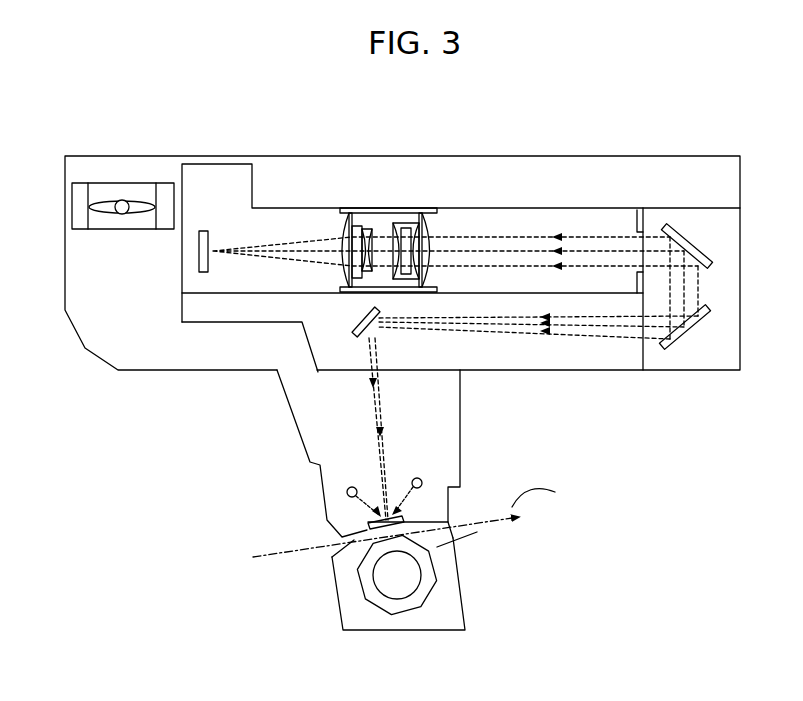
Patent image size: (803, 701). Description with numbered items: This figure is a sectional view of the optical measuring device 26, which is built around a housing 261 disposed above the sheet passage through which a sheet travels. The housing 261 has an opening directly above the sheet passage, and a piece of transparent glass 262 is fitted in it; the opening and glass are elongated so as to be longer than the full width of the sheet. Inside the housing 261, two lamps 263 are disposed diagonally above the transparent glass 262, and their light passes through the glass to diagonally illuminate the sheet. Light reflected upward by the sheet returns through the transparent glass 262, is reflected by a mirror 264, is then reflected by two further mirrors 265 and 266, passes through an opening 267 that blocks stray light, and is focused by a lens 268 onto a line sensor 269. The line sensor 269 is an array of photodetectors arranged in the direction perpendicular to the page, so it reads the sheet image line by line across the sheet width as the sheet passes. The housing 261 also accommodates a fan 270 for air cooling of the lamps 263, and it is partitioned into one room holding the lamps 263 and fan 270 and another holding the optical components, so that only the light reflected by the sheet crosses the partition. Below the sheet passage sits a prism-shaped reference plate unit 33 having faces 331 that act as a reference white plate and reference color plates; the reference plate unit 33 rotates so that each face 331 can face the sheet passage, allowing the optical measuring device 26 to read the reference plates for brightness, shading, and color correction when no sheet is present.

The optical measuring device 26 is at (572, 115).
The housing 261 is at (741, 287).
The transparent glass 262 is at (368, 525).
The lamps 263 is at (417, 480).
The mirror 264 is at (352, 327).
The mirror 265 is at (672, 348).
The mirror 266 is at (680, 240).
The opening 267 is at (640, 238).
The lens 268 is at (396, 201).
The line sensor 269 is at (203, 230).
The fan 270 is at (115, 188).
The reference plate unit 33 is at (447, 578).
The faces 331 is at (425, 527).